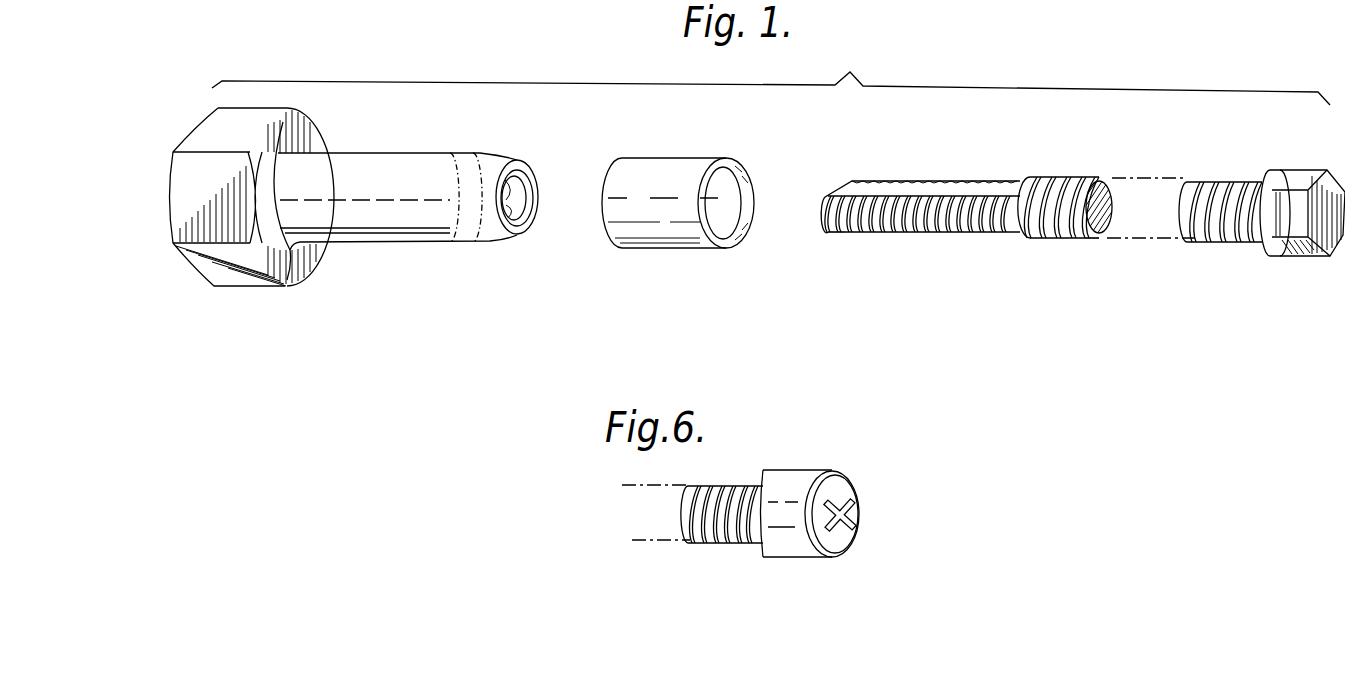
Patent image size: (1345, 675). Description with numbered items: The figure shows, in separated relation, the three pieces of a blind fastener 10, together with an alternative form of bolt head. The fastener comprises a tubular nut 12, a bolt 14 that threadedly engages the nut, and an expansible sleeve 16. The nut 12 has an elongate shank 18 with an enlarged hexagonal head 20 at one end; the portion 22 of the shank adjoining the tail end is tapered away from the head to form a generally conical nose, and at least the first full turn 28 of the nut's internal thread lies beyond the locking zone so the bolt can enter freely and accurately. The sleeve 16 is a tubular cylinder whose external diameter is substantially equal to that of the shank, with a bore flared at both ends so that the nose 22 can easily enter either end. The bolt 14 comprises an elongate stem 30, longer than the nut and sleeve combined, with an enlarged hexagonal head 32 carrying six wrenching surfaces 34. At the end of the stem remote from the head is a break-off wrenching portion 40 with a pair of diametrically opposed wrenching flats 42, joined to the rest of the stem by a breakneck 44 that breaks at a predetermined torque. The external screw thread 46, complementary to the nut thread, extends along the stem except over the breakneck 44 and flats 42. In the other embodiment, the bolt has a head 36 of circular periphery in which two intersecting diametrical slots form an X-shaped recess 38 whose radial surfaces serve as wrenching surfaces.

In FIG. 1, the blind fastener 10 is at (853, 72).
In FIG. 1, the tubular nut 12 is at (371, 212).
In FIG. 1, the bolt 14 is at (1256, 208).
In FIG. 1, the expansible sleeve 16 is at (668, 253).
In FIG. 1, the elongate shank 18 is at (407, 160).
In FIG. 1, the hexagonal head 20 is at (288, 278).
In FIG. 1, the tapered nose portion 22 is at (490, 240).
In FIG. 1, the first full turn of the nut thread 28 is at (530, 187).
In FIG. 1, the elongate stem 30 is at (1090, 182).
In FIG. 1, the bolt head 32 is at (1299, 164).
In FIG. 1, the wrenching surfaces 34 is at (1300, 210).
In FIG. 6, the modified bolt head 36 is at (834, 466).
In FIG. 6, the X-shaped recess 38 is at (855, 500).
In FIG. 1, the break-off wrenching portion 40 is at (1008, 205).
In FIG. 1, the wrenching flats 42 is at (903, 188).
In FIG. 1, the breakneck 44 is at (1020, 233).
In FIG. 1, the external screw thread 46 is at (880, 230).